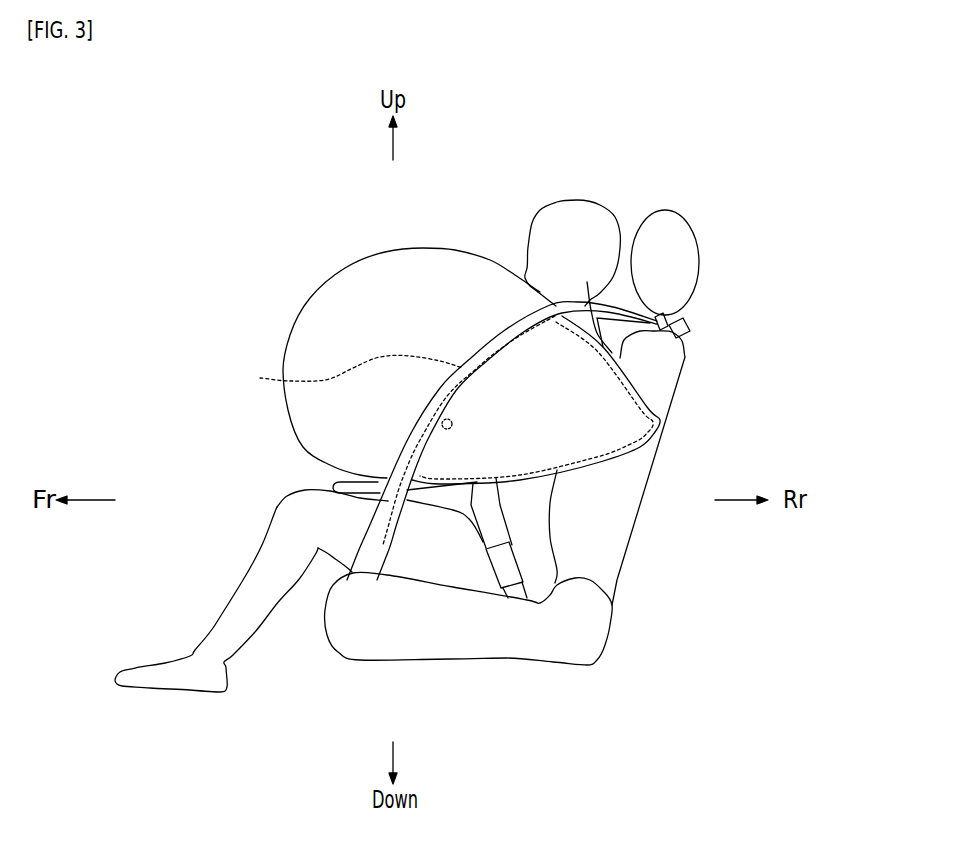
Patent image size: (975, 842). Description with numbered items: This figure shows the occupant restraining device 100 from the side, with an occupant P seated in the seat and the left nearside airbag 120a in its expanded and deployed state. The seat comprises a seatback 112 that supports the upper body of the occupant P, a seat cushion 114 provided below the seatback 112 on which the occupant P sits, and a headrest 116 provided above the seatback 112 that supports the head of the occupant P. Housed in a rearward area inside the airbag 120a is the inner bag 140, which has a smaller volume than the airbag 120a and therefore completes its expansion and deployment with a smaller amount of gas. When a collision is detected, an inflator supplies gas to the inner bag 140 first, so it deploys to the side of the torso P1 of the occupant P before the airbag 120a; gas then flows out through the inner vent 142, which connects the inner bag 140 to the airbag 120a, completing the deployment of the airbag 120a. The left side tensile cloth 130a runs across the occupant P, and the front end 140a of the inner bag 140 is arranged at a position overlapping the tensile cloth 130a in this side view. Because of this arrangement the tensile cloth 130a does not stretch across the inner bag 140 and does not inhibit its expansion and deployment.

The occupant restraining device 100 is at (685, 140).
The seatback 112 is at (625, 512).
The seat cushion 114 is at (503, 650).
The headrest 116 is at (681, 253).
The airbag 120a is at (365, 283).
The left side tensile cloth 130a is at (362, 531).
The inner bag 140 is at (665, 420).
The front end 140a is at (335, 372).
The inner vent 142 is at (420, 425).
The occupant P is at (548, 183).
The torso P1 is at (533, 512).